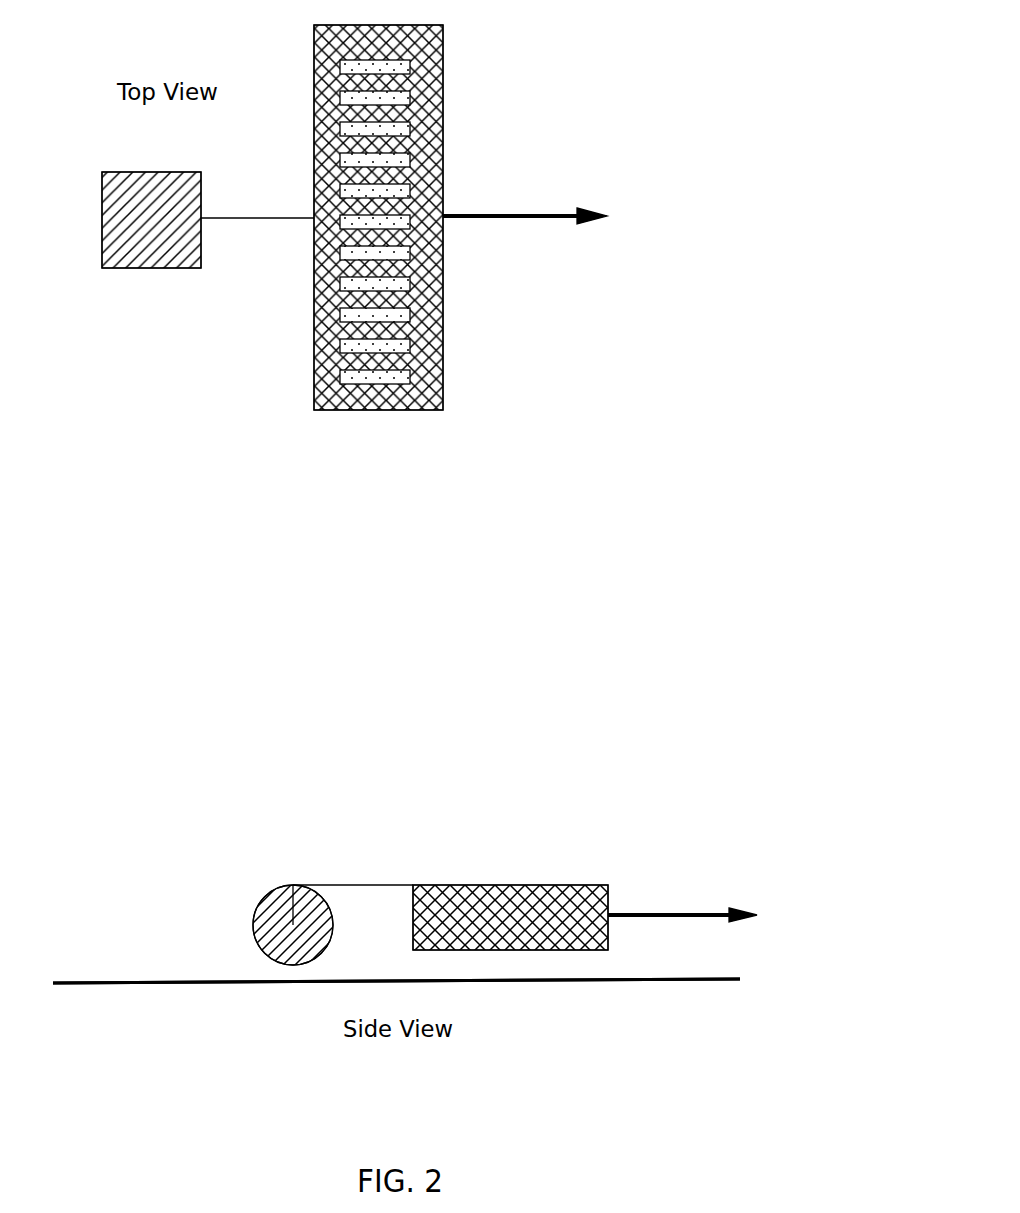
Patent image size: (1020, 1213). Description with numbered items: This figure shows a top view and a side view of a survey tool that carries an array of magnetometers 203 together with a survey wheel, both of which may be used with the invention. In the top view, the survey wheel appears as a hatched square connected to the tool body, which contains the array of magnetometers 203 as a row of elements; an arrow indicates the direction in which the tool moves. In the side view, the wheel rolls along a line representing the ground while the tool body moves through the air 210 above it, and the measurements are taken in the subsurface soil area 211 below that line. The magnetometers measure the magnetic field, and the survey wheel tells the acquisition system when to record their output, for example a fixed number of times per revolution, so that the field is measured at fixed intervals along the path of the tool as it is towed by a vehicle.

The array of magnetometers 203 is at (415, 348).
The air 210 is at (396, 968).
The subsurface soil area 211 is at (396, 1002).